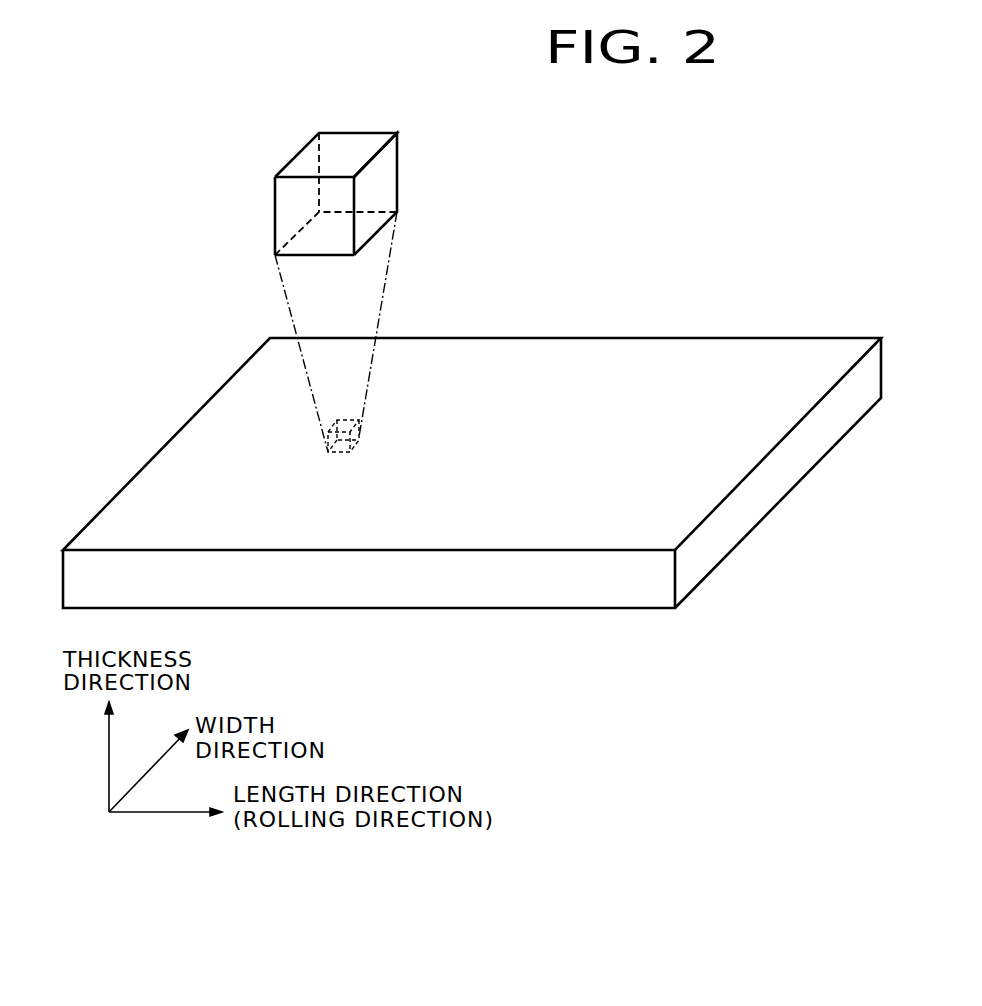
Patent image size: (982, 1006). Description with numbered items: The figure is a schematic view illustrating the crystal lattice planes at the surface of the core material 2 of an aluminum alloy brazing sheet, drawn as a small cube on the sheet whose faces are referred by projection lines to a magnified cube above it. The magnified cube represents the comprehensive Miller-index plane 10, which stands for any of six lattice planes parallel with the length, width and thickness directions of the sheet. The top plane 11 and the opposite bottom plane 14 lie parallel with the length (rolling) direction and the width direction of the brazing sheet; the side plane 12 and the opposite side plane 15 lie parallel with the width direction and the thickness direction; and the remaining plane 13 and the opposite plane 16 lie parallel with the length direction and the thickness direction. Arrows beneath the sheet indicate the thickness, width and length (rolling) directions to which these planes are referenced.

The core material 2 is at (582, 363).
The {001} plane 10 is at (335, 169).
The (001) plane 11 is at (340, 152).
The (010) plane 12 is at (380, 198).
The (100) plane 13 is at (315, 240).
The (00-1) plane 14 is at (362, 230).
The (0-10) plane 15 is at (288, 203).
The (-100) plane 16 is at (375, 173).